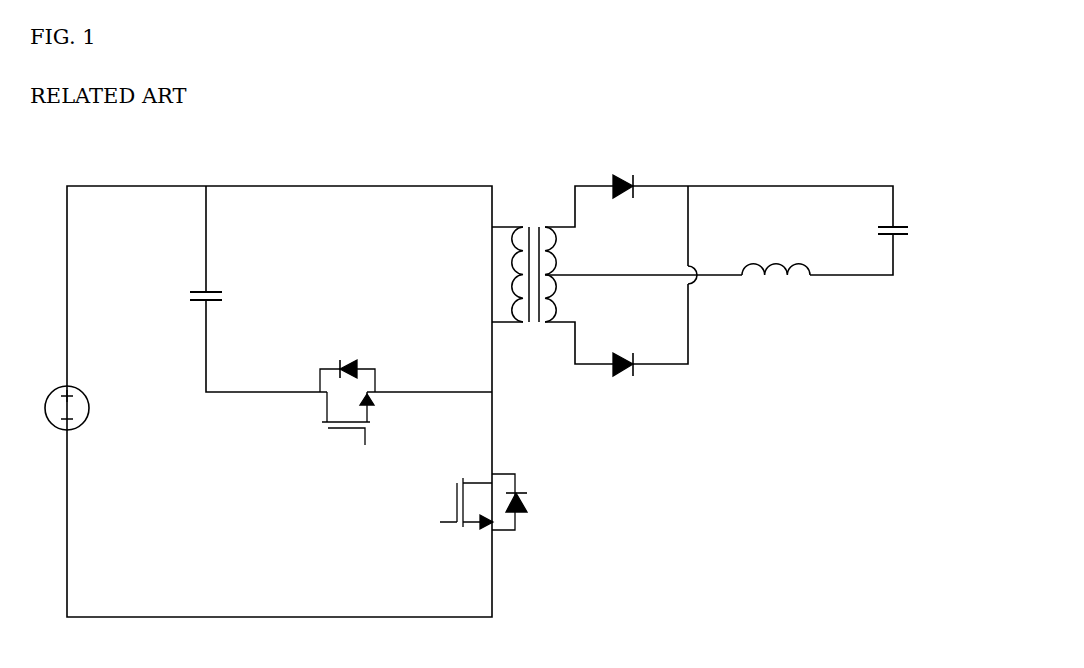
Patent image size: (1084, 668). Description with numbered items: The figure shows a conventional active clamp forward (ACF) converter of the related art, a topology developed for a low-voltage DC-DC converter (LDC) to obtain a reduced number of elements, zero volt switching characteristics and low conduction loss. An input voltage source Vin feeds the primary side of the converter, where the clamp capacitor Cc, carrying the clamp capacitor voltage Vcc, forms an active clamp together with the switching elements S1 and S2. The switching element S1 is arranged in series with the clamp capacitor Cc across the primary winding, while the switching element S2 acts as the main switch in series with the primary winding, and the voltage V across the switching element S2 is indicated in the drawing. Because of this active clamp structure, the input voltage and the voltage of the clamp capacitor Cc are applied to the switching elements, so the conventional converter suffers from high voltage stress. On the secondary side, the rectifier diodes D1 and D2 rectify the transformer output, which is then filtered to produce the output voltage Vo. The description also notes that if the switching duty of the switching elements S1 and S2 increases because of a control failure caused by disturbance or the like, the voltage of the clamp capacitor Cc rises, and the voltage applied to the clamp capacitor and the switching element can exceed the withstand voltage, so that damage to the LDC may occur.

The clamp capacitor Cc is at (200, 288).
The clamp capacitor voltage Vcc is at (245, 266).
The input voltage source Vin is at (112, 379).
The switching element S1 is at (347, 435).
The switching element S2 is at (470, 525).
The voltage across second switch V is at (549, 470).
The first rectifier diode D1 is at (623, 170).
The second rectifier diode D2 is at (623, 382).
The output voltage / output capacitor Vo is at (909, 232).